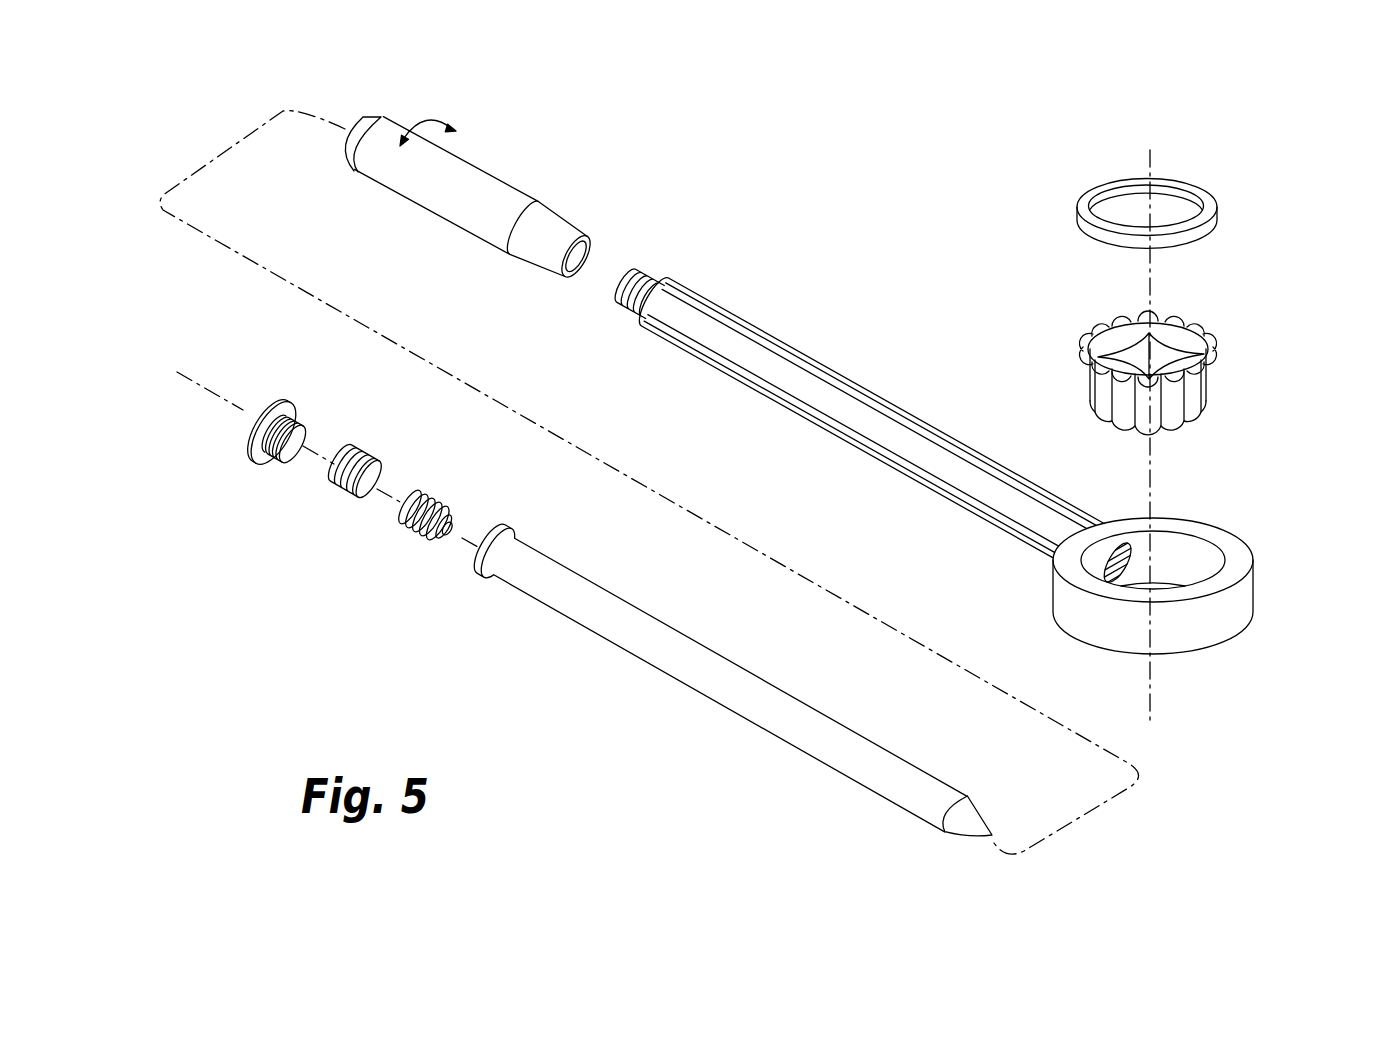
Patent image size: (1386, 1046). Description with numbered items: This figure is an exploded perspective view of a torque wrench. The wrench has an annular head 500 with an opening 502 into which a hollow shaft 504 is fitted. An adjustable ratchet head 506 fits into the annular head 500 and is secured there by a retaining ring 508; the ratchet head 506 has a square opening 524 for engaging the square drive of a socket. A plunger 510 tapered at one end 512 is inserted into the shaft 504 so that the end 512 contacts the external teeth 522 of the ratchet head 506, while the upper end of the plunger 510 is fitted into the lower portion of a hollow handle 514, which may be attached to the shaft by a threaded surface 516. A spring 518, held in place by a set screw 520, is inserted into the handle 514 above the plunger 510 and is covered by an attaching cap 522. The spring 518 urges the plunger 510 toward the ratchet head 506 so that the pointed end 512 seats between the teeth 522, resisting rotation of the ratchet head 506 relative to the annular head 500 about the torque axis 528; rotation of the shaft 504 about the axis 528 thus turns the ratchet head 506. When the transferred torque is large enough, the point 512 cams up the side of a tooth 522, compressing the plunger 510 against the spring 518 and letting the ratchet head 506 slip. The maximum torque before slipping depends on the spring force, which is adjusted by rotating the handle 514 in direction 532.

The annular head 500 is at (1257, 565).
The opening 502 is at (1137, 548).
The hollow shaft 504 is at (955, 385).
The adjustable ratchet head 506 is at (1189, 335).
The retaining ring 508 is at (1183, 185).
The plunger 510 is at (746, 718).
The tapered end 512 is at (990, 838).
The hollow handle 514 is at (500, 177).
The threaded surface 516 is at (643, 270).
The spring 518 is at (447, 507).
The set screw 520 is at (365, 460).
The external teeth 522 is at (297, 417).
The square opening 524 is at (1137, 357).
The torque axis 528 is at (1147, 693).
The direction 532 is at (422, 127).